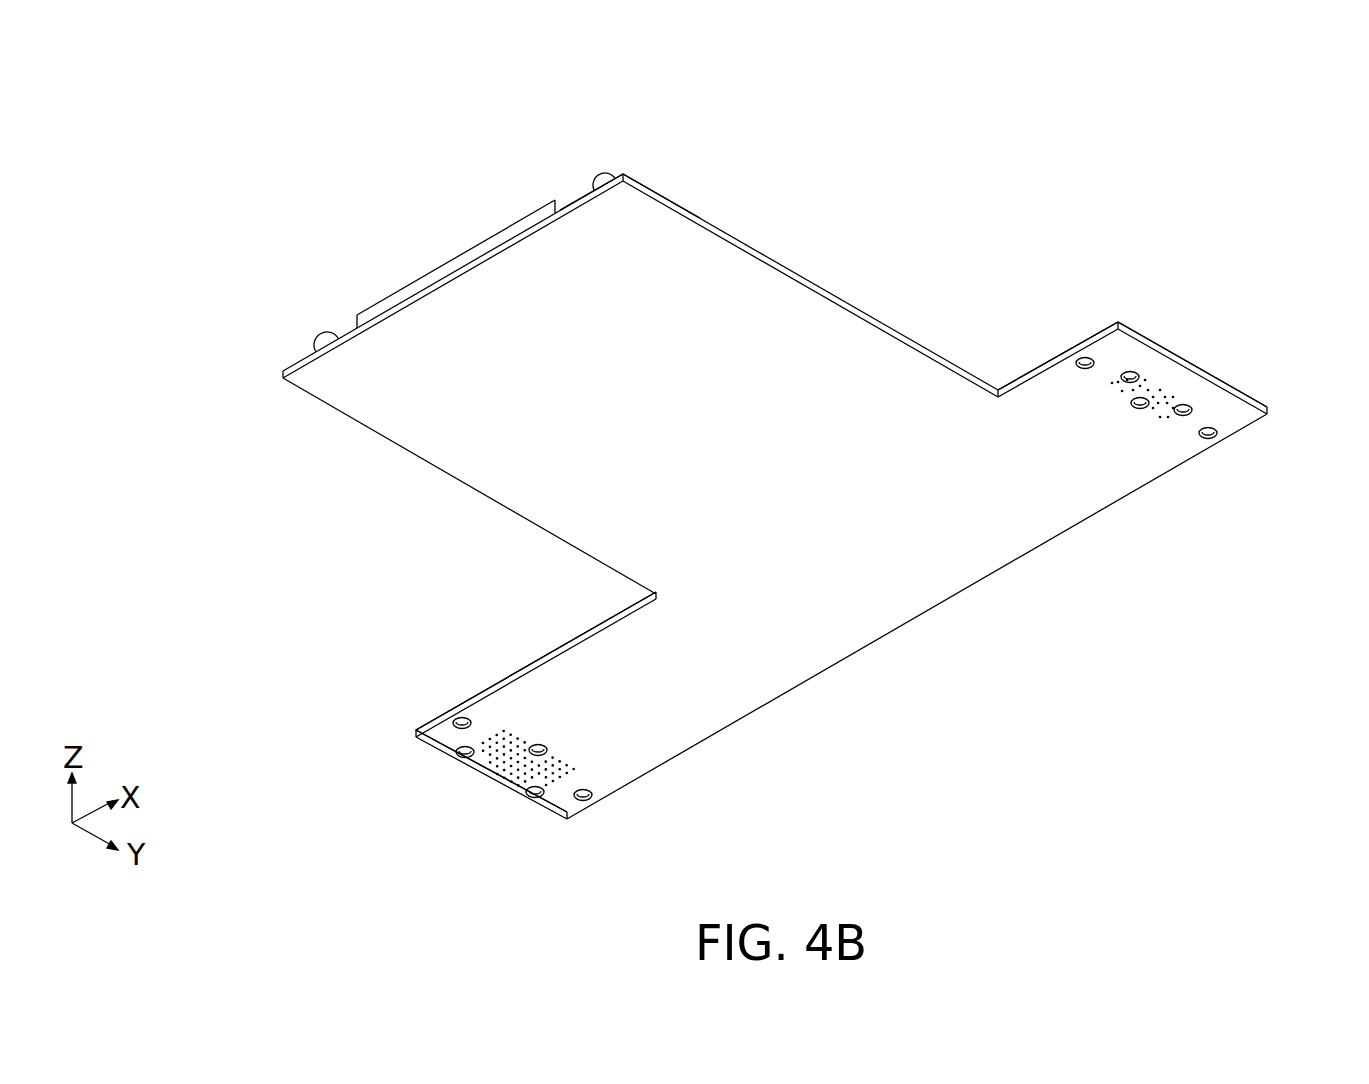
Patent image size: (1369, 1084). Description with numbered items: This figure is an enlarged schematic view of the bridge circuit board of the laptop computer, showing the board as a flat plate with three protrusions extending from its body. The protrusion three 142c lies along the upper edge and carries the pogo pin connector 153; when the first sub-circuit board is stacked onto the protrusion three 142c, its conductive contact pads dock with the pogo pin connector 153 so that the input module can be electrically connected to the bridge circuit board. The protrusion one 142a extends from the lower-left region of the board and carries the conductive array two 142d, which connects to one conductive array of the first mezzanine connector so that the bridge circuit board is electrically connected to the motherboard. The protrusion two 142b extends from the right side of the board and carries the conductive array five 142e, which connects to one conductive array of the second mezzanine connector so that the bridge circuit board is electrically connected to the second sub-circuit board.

The pogo pin connector 153 is at (445, 264).
The protrusion one 142a is at (450, 752).
The protrusion two 142b is at (1160, 346).
The protrusion three 142c is at (575, 205).
The conductive array two 142d is at (510, 783).
The conductive array five 142e is at (1173, 397).